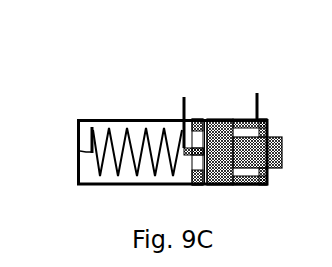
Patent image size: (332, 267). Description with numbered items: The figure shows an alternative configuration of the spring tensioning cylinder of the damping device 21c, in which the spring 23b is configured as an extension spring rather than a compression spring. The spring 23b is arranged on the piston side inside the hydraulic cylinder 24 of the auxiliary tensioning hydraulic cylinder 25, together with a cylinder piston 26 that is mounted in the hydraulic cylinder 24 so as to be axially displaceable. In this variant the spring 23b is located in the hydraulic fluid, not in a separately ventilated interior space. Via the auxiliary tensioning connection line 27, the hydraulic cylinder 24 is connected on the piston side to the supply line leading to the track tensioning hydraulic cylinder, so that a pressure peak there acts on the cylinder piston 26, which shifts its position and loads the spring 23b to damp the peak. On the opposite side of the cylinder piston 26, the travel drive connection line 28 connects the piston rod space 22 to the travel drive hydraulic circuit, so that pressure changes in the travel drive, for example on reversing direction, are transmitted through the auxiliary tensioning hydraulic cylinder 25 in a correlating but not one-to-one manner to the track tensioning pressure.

The damping device 21c is at (163, 132).
The piston rod space 22 is at (206, 172).
The spring 23b is at (128, 177).
The hydraulic cylinder 24 is at (146, 159).
The auxiliary tensioning hydraulic cylinder 25 is at (222, 124).
The cylinder piston 26 is at (239, 182).
The auxiliary tensioning connection line 27 is at (183, 115).
The travel drive connection line 28 is at (267, 115).